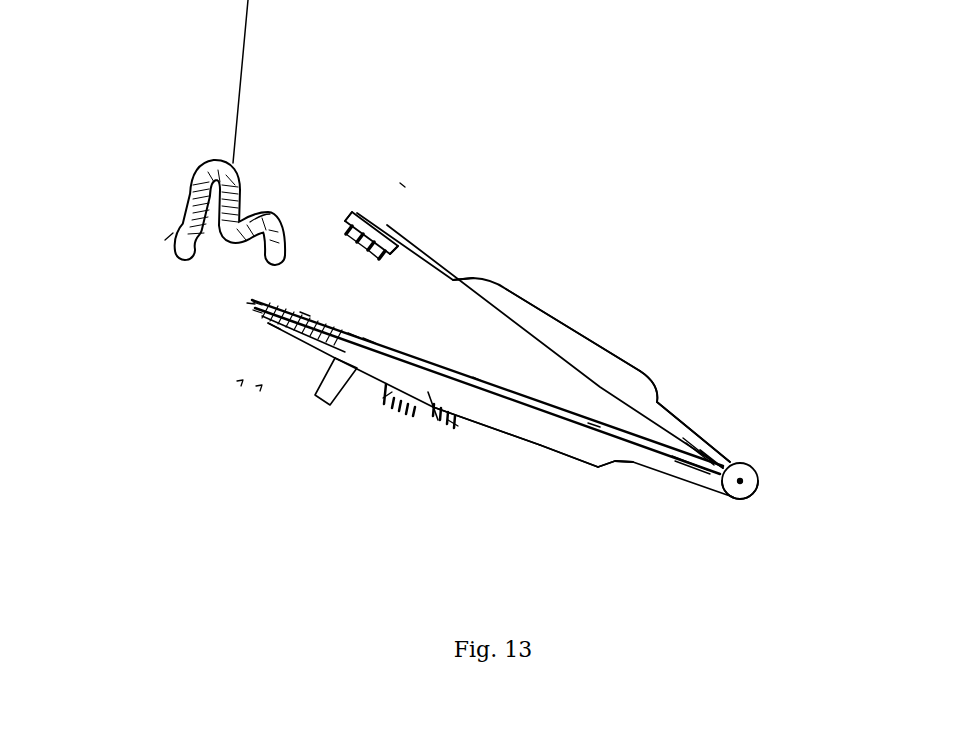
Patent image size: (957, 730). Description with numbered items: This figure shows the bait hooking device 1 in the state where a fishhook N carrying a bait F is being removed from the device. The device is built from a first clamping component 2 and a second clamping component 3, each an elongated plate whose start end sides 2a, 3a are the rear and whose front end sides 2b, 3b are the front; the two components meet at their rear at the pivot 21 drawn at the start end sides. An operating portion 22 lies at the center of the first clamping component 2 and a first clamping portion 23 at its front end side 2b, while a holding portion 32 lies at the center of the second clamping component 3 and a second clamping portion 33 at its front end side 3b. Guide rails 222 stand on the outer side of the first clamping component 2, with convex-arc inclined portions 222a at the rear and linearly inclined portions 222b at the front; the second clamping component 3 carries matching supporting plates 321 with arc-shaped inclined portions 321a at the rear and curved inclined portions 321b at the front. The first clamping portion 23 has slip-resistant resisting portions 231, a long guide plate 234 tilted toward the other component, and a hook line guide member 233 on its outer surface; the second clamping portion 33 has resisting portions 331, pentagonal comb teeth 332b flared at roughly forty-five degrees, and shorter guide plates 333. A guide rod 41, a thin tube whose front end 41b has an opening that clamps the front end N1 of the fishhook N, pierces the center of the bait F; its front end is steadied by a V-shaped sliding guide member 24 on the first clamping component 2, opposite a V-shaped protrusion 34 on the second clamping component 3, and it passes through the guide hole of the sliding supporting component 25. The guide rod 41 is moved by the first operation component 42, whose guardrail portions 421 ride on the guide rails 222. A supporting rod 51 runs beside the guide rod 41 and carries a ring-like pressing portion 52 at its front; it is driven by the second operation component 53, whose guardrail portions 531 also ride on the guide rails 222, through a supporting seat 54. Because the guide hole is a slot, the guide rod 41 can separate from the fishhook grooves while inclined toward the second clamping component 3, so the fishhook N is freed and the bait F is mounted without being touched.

The bait hooking device 1 is at (245, 70).
The fishhook N is at (183, 205).
The front end of the fishhook N1 is at (247, 220).
The bait F is at (173, 233).
The first clamping component 2 is at (665, 470).
The pivot 21 is at (745, 502).
The operating portion 22 is at (439, 559).
The guide rails 222 is at (523, 447).
The inclined portions 222a is at (612, 470).
The inclined portions 222b is at (433, 422).
The first clamping portion 23 is at (243, 380).
The resisting portions 231 is at (303, 312).
The hook line guide member 233 is at (317, 409).
The guide plate 234 is at (268, 323).
The sliding guide member 24 is at (363, 338).
The sliding supporting component 25 is at (588, 423).
The start end side 2a is at (727, 500).
The front end side 2b is at (262, 385).
The second clamping component 3 is at (723, 443).
The start end side 3a is at (733, 455).
The front end side 3b is at (400, 183).
The holding portion 32 is at (607, 238).
The supporting plates 321 is at (580, 325).
The inclined portions 321a is at (657, 390).
The inclined portions 321b is at (470, 278).
The second clamping portion 33 is at (437, 188).
The resisting portions 331 is at (373, 260).
The comb teeth 332b is at (383, 227).
The guide plates 333 is at (353, 222).
The V-shaped protrusion 34 is at (407, 260).
The guide rod 41 is at (253, 310).
The front end of the guide rod 41b is at (247, 303).
The first operation component 42 is at (400, 417).
The guardrail portions 421 is at (383, 398).
The supporting rod 51 is at (348, 333).
The pressing portion 52 is at (253, 302).
The second operation component 53 is at (440, 420).
The guardrail portions 531 is at (450, 420).
The supporting seat 54 is at (473, 377).